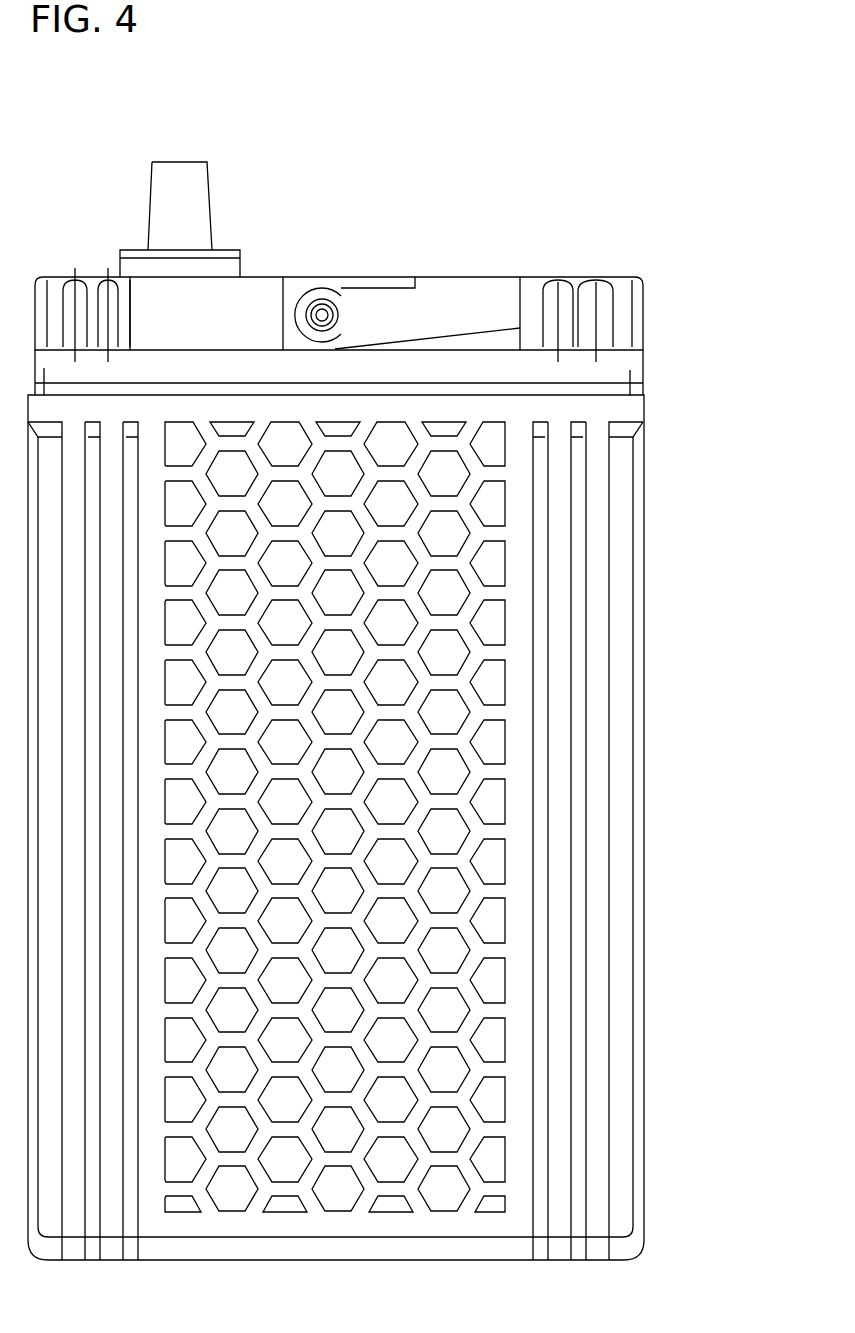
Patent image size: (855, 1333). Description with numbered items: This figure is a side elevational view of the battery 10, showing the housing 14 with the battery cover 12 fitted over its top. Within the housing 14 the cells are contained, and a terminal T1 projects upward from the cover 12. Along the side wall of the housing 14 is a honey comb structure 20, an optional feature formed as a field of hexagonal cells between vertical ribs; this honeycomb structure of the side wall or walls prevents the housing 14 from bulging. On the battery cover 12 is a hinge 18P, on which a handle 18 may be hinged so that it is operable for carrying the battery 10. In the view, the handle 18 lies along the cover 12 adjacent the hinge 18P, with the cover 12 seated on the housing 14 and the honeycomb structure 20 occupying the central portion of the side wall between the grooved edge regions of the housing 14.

The battery 10 is at (421, 237).
The battery cover 12 is at (645, 300).
The housing 14 is at (643, 962).
The handle 18 is at (496, 275).
The hinge 18P is at (324, 292).
The honey comb structure 20 is at (461, 689).
The terminal T1 is at (211, 212).